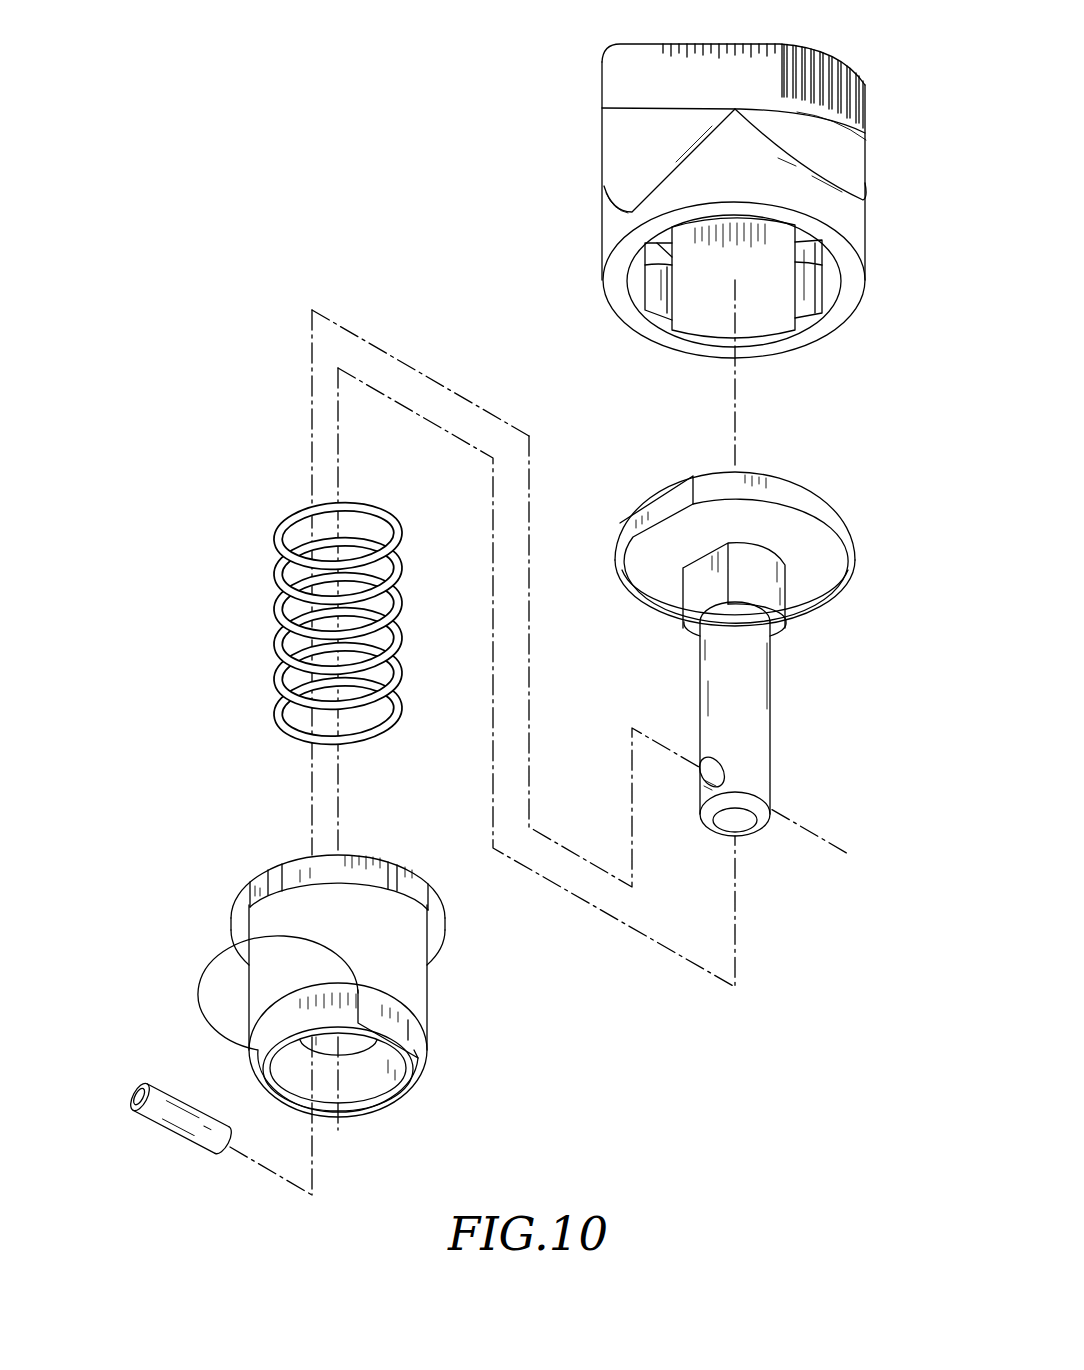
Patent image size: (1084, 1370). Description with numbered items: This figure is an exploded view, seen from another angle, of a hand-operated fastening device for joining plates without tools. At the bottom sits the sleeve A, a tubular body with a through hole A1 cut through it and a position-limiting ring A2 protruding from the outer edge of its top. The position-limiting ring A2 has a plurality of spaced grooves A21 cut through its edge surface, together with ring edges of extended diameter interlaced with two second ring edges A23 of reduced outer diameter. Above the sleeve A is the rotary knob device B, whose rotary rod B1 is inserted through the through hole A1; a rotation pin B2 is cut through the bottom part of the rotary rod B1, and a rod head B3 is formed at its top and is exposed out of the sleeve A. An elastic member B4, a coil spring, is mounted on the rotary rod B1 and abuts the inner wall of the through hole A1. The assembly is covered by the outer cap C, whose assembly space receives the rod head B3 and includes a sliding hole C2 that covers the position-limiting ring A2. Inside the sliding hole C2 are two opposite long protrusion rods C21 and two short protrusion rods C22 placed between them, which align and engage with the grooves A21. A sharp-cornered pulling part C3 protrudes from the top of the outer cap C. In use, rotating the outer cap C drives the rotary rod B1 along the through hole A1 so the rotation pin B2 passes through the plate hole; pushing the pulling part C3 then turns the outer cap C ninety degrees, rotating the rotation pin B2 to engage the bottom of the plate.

The sleeve A is at (321, 953).
The through hole A1 is at (357, 1062).
The position-limiting ring A2 is at (324, 854).
The grooves A21 is at (265, 883).
The second ring edges A23 is at (303, 870).
The rotary knob device B is at (766, 627).
The rotary rod B1 is at (748, 685).
The rotation pin B2 is at (178, 1127).
The rod head B3 is at (720, 484).
The elastic member B4 is at (283, 597).
The outer cap C is at (702, 216).
The sliding hole C2 is at (762, 330).
The long protrusion rods C21 is at (807, 302).
The short protrusion rods C22 is at (662, 303).
The pulling part C3 is at (612, 57).